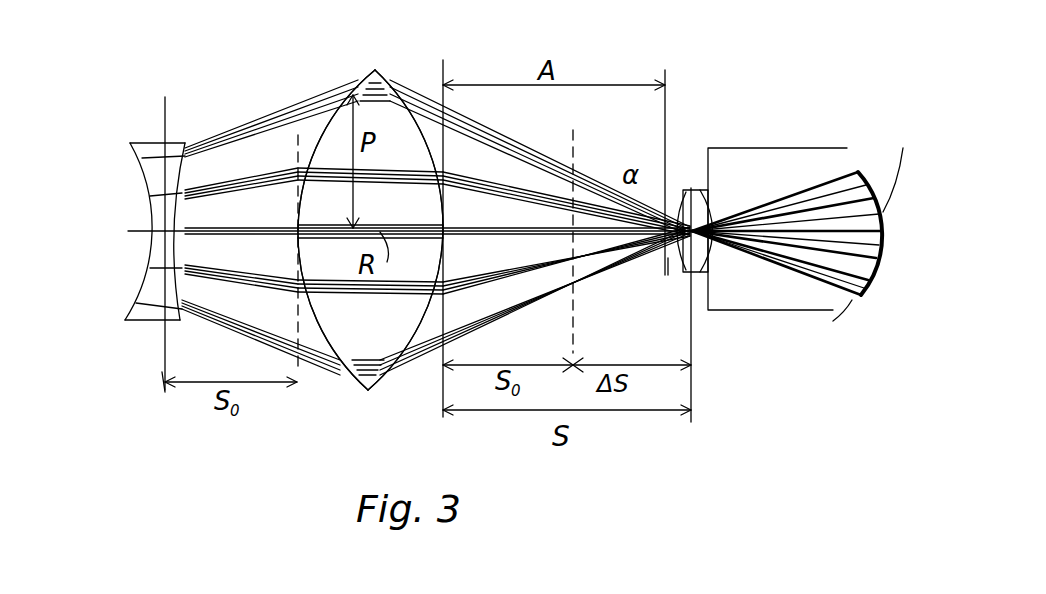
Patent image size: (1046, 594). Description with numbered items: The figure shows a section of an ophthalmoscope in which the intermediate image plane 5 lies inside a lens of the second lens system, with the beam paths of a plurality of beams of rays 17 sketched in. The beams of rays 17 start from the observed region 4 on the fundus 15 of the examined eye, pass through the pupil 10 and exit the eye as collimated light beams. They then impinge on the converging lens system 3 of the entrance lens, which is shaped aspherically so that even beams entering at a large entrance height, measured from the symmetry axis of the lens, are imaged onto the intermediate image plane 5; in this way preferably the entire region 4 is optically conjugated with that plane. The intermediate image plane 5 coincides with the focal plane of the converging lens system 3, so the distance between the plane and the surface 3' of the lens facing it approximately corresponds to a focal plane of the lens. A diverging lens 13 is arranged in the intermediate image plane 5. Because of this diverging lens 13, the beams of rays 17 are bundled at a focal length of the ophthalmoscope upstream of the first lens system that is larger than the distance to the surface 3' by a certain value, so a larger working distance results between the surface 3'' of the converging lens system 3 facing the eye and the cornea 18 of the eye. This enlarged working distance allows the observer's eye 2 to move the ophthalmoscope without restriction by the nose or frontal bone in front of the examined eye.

The diverging lens 13 is at (132, 148).
The converging lens system 3 is at (370, 238).
The surface of the converging lens system facing the intermediate image plane 3' is at (336, 222).
The surface of the first lens system facing the eye 3'' is at (405, 202).
The beams of rays 17 is at (301, 125).
The pupil 10 is at (693, 190).
The eye of the observer 2 is at (763, 311).
The fundus 15 is at (858, 172).
The observed region 4 is at (868, 217).
The cornea 18 is at (668, 275).
The intermediate image plane 5 is at (160, 392).